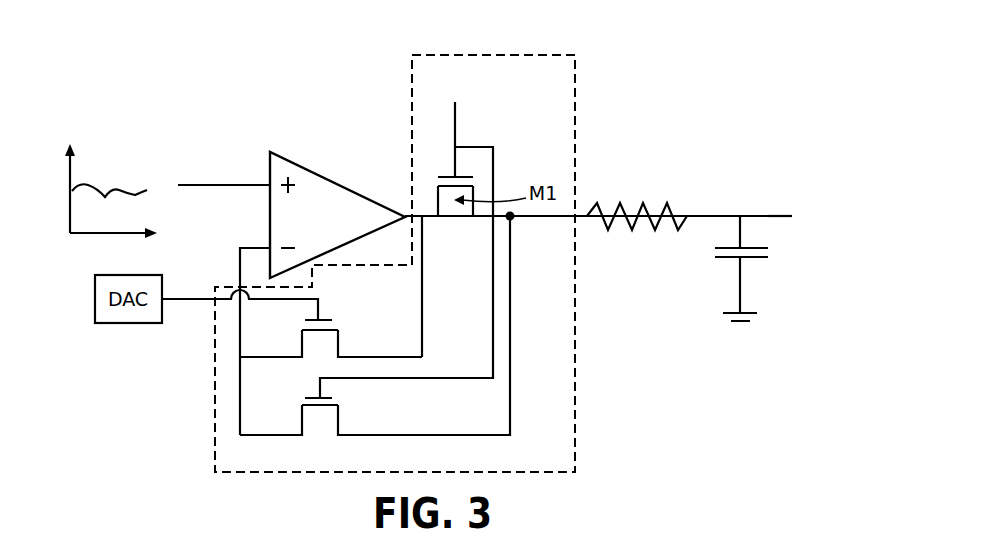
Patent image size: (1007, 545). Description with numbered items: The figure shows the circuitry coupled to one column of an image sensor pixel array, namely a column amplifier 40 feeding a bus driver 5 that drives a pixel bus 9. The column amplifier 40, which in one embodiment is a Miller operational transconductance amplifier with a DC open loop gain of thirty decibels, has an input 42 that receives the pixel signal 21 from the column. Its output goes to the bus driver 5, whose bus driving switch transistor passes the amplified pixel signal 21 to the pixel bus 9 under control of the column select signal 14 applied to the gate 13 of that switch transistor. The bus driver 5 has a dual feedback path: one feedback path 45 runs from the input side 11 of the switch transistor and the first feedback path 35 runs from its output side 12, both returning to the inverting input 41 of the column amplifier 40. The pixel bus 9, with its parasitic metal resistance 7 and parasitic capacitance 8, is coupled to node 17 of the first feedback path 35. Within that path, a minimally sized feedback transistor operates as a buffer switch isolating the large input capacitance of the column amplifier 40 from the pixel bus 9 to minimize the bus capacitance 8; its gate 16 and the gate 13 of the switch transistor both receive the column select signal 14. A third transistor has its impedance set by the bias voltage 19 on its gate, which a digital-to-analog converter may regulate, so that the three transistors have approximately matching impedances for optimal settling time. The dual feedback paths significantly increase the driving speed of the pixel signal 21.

The pixel signal 21 is at (112, 166).
The input 42 is at (236, 184).
The inverting input 41 is at (253, 246).
The column amplifier 40 is at (337, 215).
The gate 13 is at (447, 177).
The column select signal 14 is at (504, 125).
The input side 11 is at (437, 218).
The output side 12 is at (473, 218).
The bus driver 5 is at (576, 58).
The pixel bus 9 is at (730, 172).
The Rload 7 is at (626, 235).
The Cload 8 is at (705, 253).
The node 17 is at (516, 220).
The feedback path 45 is at (423, 327).
The Vbias 19 is at (292, 327).
The gate 16 is at (322, 392).
The feedback path 35 is at (236, 395).